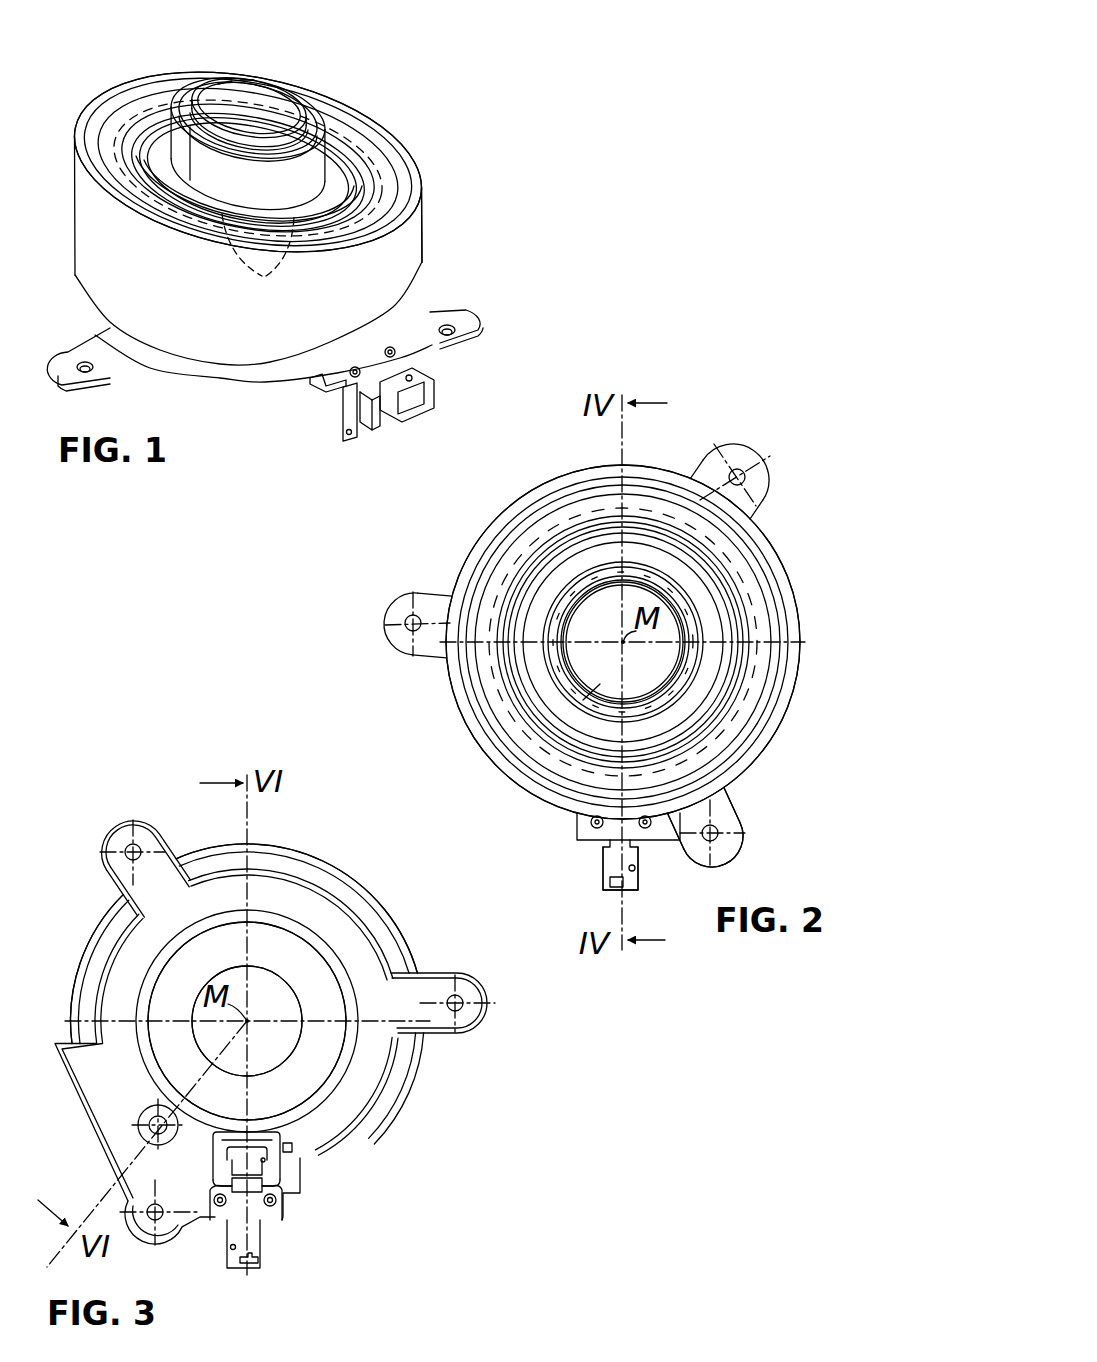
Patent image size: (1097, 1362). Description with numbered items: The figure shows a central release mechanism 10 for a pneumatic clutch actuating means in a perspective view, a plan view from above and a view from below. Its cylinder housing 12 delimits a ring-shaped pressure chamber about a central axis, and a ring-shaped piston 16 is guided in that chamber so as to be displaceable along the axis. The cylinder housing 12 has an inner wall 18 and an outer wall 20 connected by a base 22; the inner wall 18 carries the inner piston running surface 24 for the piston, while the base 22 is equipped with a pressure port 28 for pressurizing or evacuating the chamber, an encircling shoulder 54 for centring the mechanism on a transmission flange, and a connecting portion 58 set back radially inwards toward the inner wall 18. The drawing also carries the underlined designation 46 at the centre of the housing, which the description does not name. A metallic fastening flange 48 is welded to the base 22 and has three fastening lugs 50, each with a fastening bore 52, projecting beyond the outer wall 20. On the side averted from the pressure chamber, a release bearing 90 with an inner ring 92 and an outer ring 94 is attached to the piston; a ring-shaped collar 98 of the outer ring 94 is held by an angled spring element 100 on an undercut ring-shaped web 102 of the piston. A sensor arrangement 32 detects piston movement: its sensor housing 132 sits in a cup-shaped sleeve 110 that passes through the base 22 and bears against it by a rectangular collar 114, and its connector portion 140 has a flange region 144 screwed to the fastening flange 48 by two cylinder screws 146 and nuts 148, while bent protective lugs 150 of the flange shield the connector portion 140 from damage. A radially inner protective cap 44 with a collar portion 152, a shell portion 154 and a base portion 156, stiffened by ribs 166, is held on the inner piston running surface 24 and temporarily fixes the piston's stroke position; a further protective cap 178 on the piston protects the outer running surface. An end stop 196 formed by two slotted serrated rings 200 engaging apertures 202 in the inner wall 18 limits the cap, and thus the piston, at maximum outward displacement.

In FIG. 1, the central release mechanism 10 is at (434, 109).
In FIG. 2, the central release mechanism 10 is at (785, 514).
In FIG. 3, the central release mechanism 10 is at (386, 866).
In FIG. 1, the cylinder housing 12 is at (221, 368).
In FIG. 2, the cylinder housing 12 is at (600, 595).
In FIG. 3, the cylinder housing 12 is at (301, 872).
In FIG. 1, the ring-shaped piston 16 is at (404, 176).
In FIG. 2, the ring-shaped piston 16 is at (638, 496).
In FIG. 1, the inner wall 18 is at (284, 86).
In FIG. 2, the inner wall 18 is at (574, 667).
In FIG. 3, the inner wall 18 is at (254, 1068).
In FIG. 1, the outer wall 20 is at (108, 325).
In FIG. 3, the outer wall 20 is at (404, 936).
In FIG. 3, the base 22 is at (365, 1131).
In FIG. 1, the inner piston running surface 24 is at (197, 145).
In FIG. 2, the inner piston running surface 24 is at (563, 643).
In FIG. 3, the pressure port 28 is at (146, 1130).
In FIG. 1, the sensor arrangement 32 is at (368, 406).
In FIG. 2, the sensor arrangement 32 is at (604, 845).
In FIG. 3, the sensor arrangement 32 is at (284, 1178).
In FIG. 1, the protective cap 44 is at (312, 177).
In FIG. 2, the protective cap 44 is at (694, 609).
In FIG. 1, the central opening 46 is at (204, 126).
In FIG. 2, the central opening 46 is at (630, 676).
In FIG. 3, the central opening 46 is at (255, 1011).
In FIG. 1, the fastening flange 48 is at (430, 258).
In FIG. 2, the fastening flange 48 is at (800, 704).
In FIG. 3, the fastening flange 48 is at (309, 931).
In FIG. 1, the fastening lugs 50 is at (75, 372).
In FIG. 2, the fastening lugs 50 is at (752, 465).
In FIG. 3, the fastening lugs 50 is at (145, 836).
In FIG. 1, the fastening bore 52 is at (85, 372).
In FIG. 2, the fastening bore 52 is at (740, 470).
In FIG. 3, the fastening bore 52 is at (131, 845).
In FIG. 3, the shoulder 54 is at (253, 923).
In FIG. 3, the connecting portion 58 is at (307, 1011).
In FIG. 1, the release bearing 90 is at (138, 195).
In FIG. 2, the release bearing 90 is at (704, 569).
In FIG. 1, the inner ring 92 is at (118, 170).
In FIG. 2, the inner ring 92 is at (720, 618).
In FIG. 1, the outer ring 94 is at (163, 220).
In FIG. 2, the outer ring 94 is at (737, 643).
In FIG. 1, the ring-shaped collar 98 is at (150, 225).
In FIG. 2, the ring-shaped collar 98 is at (738, 673).
In FIG. 1, the angled spring element 100 is at (157, 180).
In FIG. 2, the angled spring element 100 is at (720, 706).
In FIG. 1, the ring-shaped web 102 is at (137, 140).
In FIG. 2, the ring-shaped web 102 is at (718, 738).
In FIG. 3, the sleeve 110 is at (280, 1137).
In FIG. 3, the collar 114 is at (248, 1136).
In FIG. 1, the sensor housing 132 is at (420, 372).
In FIG. 2, the sensor housing 132 is at (640, 873).
In FIG. 3, the sensor housing 132 is at (240, 1205).
In FIG. 1, the connector portion 140 is at (398, 402).
In FIG. 2, the connector portion 140 is at (607, 874).
In FIG. 3, the connector portion 140 is at (254, 1235).
In FIG. 1, the flange region 144 is at (349, 398).
In FIG. 3, the flange region 144 is at (236, 1183).
In FIG. 1, the cylinder screws 146 is at (390, 347).
In FIG. 2, the cylinder screws 146 is at (586, 823).
In FIG. 3, the nuts 148 is at (267, 1197).
In FIG. 1, the protective lugs 150 is at (312, 384).
In FIG. 3, the protective lugs 150 is at (290, 1150).
In FIG. 1, the collar portion 152 is at (322, 129).
In FIG. 2, the collar portion 152 is at (587, 577).
In FIG. 1, the shell portion 154 is at (382, 171).
In FIG. 2, the shell portion 154 is at (568, 587).
In FIG. 1, the base portion 156 is at (168, 140).
In FIG. 2, the base portion 156 is at (578, 582).
In FIG. 1, the ribs 166 is at (300, 182).
In FIG. 2, the ribs 166 is at (509, 596).
In FIG. 1, the protective cap 178 is at (368, 286).
In FIG. 2, the protective cap 178 is at (470, 730).
In FIG. 3, the protective cap 178 is at (74, 982).
In FIG. 1, the end stop 196 is at (229, 152).
In FIG. 2, the end stop 196 is at (583, 700).
In FIG. 1, the slotted serrated rings 200 is at (253, 112).
In FIG. 1, the apertures 202 is at (248, 84).